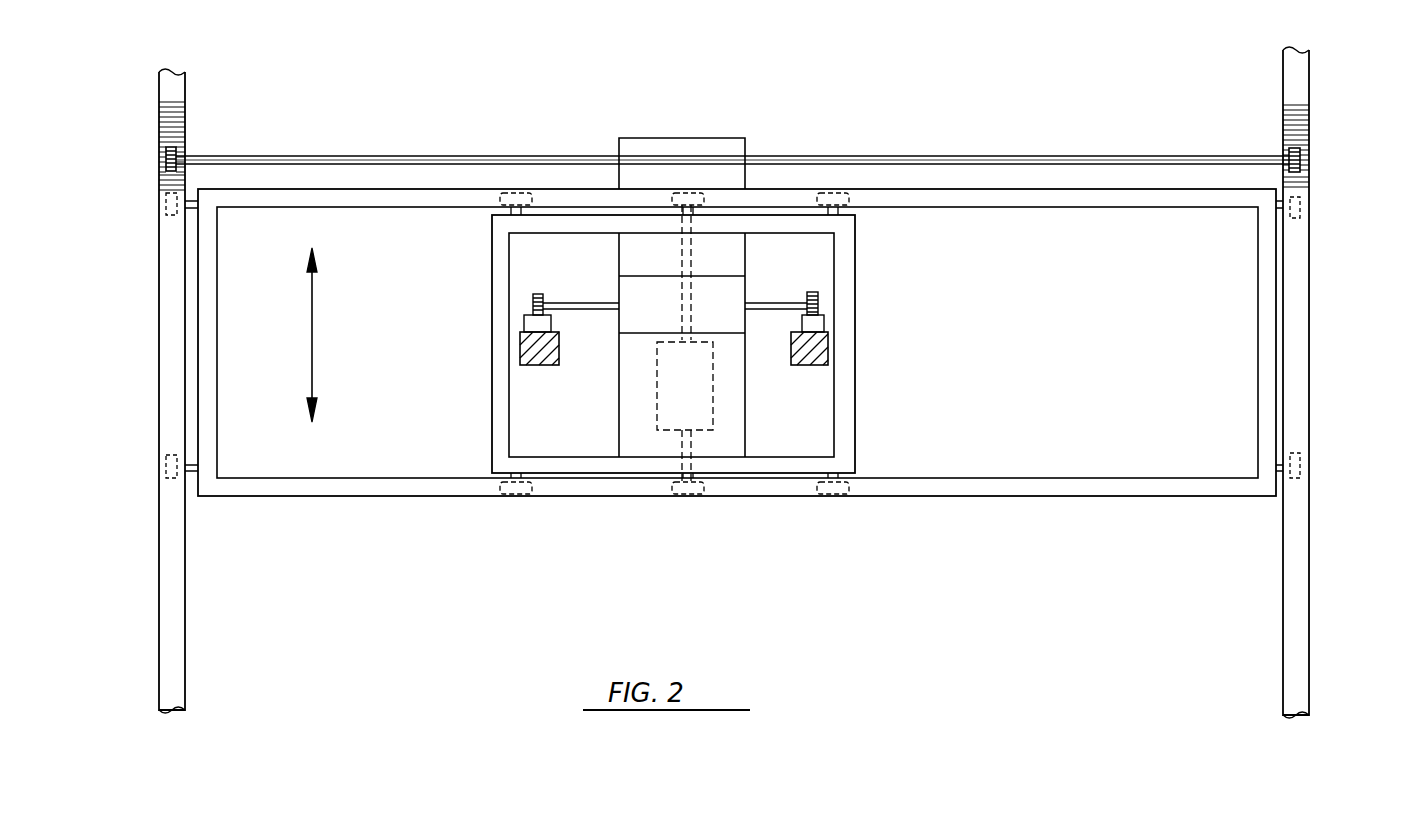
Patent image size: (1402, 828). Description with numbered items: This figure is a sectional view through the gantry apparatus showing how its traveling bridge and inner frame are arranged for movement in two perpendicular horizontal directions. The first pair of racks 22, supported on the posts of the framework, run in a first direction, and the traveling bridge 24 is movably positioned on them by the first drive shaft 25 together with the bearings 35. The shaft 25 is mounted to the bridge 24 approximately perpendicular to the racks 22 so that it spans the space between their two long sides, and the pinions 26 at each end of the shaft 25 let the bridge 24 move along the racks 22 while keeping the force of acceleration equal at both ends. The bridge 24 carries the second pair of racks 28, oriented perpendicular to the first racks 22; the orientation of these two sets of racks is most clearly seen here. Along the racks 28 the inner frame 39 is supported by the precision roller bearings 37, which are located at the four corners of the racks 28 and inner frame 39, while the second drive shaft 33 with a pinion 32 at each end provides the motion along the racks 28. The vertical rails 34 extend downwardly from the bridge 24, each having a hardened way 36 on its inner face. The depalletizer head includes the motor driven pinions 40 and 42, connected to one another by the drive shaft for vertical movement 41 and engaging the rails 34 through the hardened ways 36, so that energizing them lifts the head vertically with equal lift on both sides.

The first pair of racks 22 is at (185, 118).
The traveling bridge 24 is at (638, 243).
The first drive shaft 25 is at (440, 156).
The pinions 26 is at (180, 150).
The second pair of racks 28 is at (905, 195).
The pinions 32 is at (687, 193).
The second drive shaft 33 is at (680, 432).
The vertical rails 34 is at (545, 366).
The bearings 35 is at (165, 206).
The hardened ways 36 is at (528, 322).
The bearings 37 is at (518, 195).
The inner frame 39 is at (857, 265).
The motor driven pinion 40 is at (533, 300).
The drive shaft for vertical movement 41 is at (775, 303).
The motor driven pinion 42 is at (820, 312).